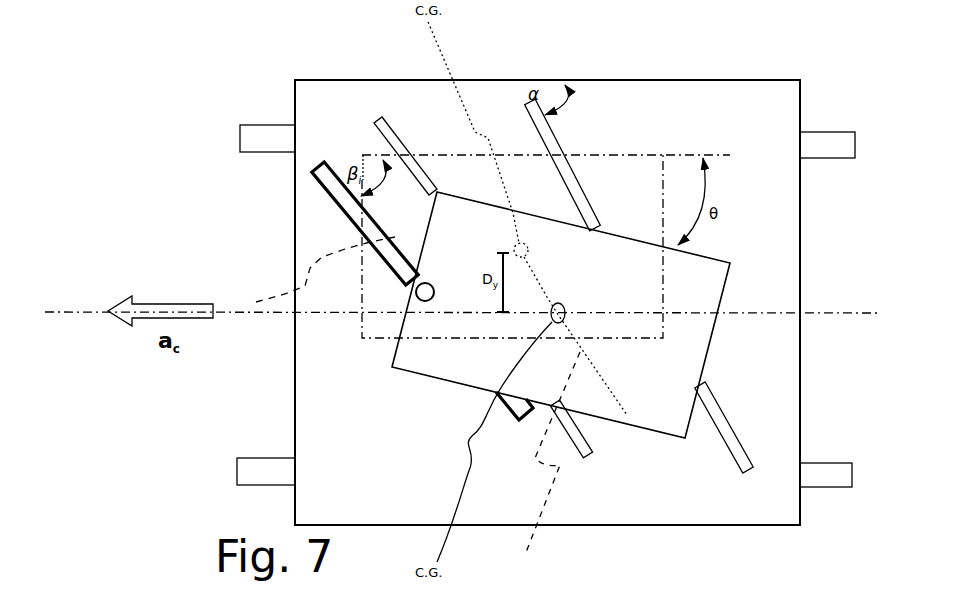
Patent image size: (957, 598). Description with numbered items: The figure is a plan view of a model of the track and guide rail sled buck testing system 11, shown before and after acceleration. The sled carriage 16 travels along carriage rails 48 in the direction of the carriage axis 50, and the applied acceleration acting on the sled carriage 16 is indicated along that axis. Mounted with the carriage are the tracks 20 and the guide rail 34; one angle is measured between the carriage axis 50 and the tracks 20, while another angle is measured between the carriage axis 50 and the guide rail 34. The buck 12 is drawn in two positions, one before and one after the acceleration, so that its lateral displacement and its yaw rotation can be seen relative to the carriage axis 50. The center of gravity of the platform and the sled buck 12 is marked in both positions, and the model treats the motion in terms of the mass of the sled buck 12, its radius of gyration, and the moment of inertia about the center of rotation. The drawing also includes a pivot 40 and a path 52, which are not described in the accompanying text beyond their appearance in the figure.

The system 11 is at (775, 53).
The buck 12 is at (663, 152).
The sled carriage 16 is at (777, 277).
The tracks 20 is at (376, 122).
The guide rail 34 is at (312, 174).
The pivot 40 is at (416, 292).
The carriage rails 48 is at (820, 143).
The carriage axis 50 is at (78, 311).
The center of gravity path 52 is at (544, 467).